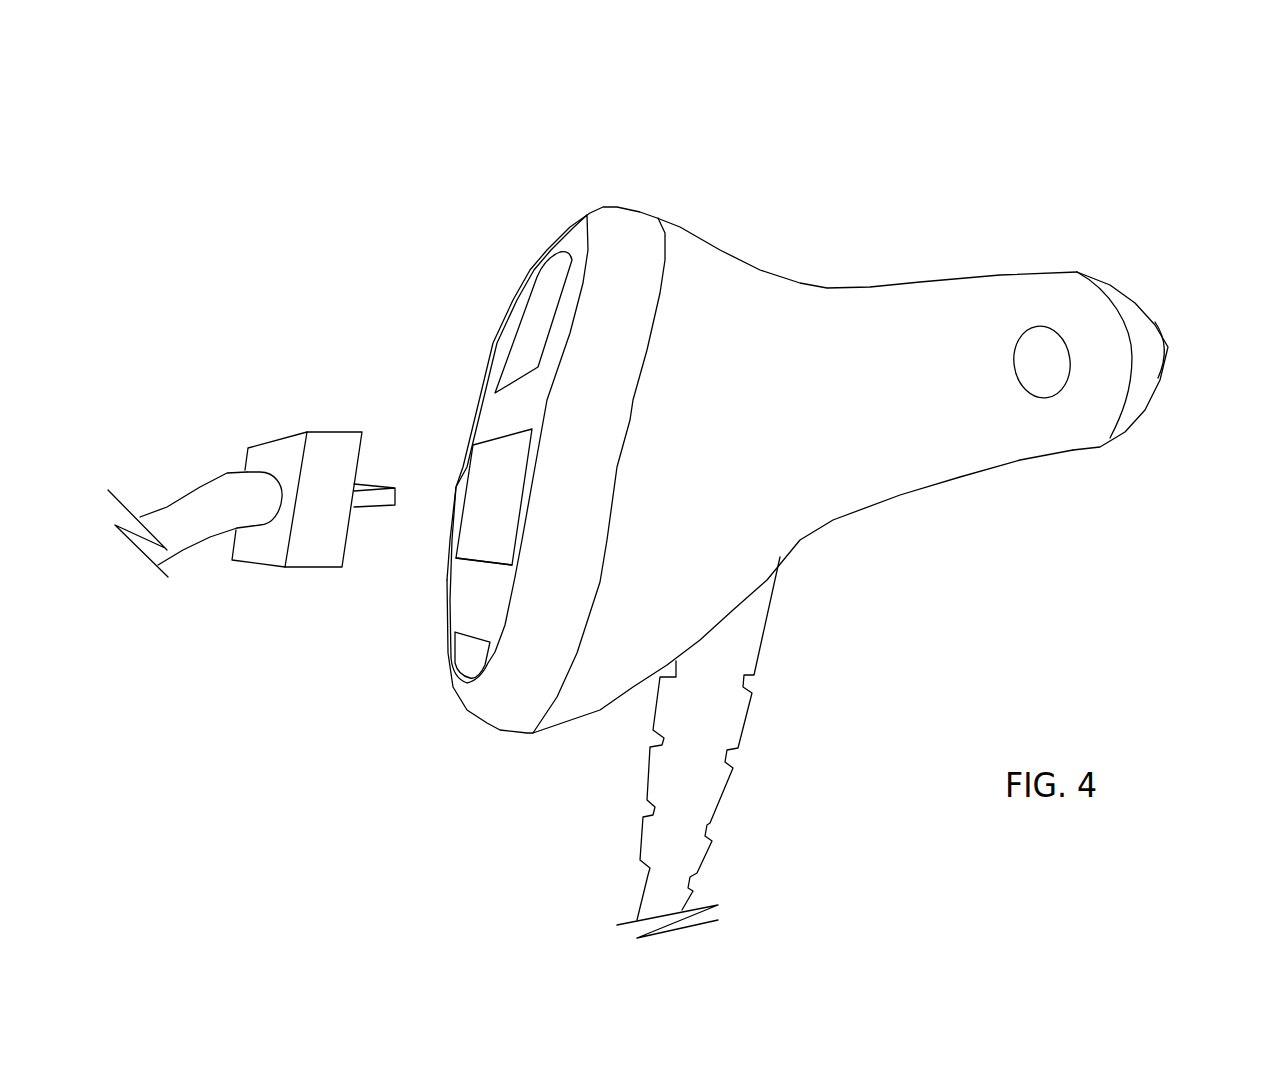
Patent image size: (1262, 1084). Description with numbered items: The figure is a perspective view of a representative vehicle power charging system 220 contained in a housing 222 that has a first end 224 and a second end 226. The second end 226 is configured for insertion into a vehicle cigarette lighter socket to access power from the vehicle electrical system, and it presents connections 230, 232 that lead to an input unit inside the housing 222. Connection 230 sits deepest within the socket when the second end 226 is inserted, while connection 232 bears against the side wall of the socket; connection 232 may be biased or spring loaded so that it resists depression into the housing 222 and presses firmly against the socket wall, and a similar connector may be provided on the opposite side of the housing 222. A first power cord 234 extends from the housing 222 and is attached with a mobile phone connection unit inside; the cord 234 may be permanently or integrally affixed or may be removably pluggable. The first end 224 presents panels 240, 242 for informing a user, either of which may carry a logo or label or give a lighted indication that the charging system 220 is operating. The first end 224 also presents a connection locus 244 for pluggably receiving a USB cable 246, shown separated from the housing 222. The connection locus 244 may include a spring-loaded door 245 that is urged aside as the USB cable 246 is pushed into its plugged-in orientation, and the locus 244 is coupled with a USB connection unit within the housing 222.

The vehicle power charging system 220 is at (475, 831).
The housing 222 is at (773, 272).
The first end 224 is at (552, 154).
The second end 226 is at (982, 218).
The connection 230 is at (1170, 337).
The connection 232 is at (1014, 367).
The first power cord 234 is at (740, 740).
The panel 240 is at (542, 290).
The panel 242 is at (460, 643).
The connection locus 244 is at (458, 464).
The spring-loaded door 245 is at (465, 547).
The USB cable 246 is at (282, 440).